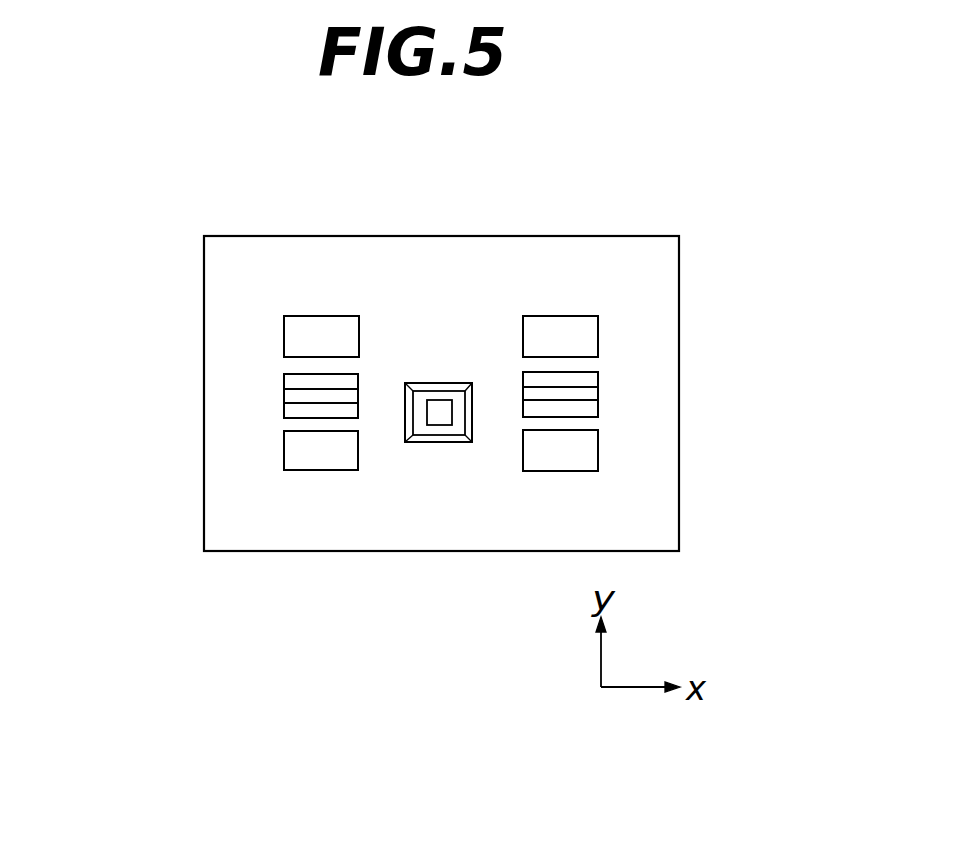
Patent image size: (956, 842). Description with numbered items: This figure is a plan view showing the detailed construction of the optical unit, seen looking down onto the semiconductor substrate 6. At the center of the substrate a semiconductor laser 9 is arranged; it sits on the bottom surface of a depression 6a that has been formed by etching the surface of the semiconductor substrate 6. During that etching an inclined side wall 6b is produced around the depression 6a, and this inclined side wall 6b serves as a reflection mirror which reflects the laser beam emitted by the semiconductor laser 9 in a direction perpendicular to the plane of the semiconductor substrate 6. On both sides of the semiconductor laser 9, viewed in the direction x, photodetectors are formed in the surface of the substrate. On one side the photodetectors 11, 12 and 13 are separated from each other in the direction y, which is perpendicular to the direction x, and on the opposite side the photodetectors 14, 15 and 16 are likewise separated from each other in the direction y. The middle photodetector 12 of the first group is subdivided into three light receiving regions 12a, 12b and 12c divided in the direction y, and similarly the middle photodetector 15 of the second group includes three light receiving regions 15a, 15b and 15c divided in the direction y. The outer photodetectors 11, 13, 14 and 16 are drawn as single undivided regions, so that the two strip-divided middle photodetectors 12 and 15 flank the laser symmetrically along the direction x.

The semiconductor substrate 6 is at (343, 236).
The depression 6a is at (448, 442).
The inclined side wall 6b is at (443, 383).
The semiconductor laser 9 is at (437, 418).
The photodetector 11 is at (596, 457).
The middle photodetector 12 is at (772, 325).
The light receiving region 12a is at (598, 393).
The light receiving region 12b is at (598, 380).
The light receiving region 12c is at (598, 407).
The photodetector 13 is at (592, 316).
The photodetector 14 is at (287, 458).
The middle photodetector 15 is at (102, 325).
The light receiving region 15a is at (284, 400).
The light receiving region 15b is at (284, 382).
The light receiving region 15c is at (284, 412).
The photodetector 16 is at (294, 318).